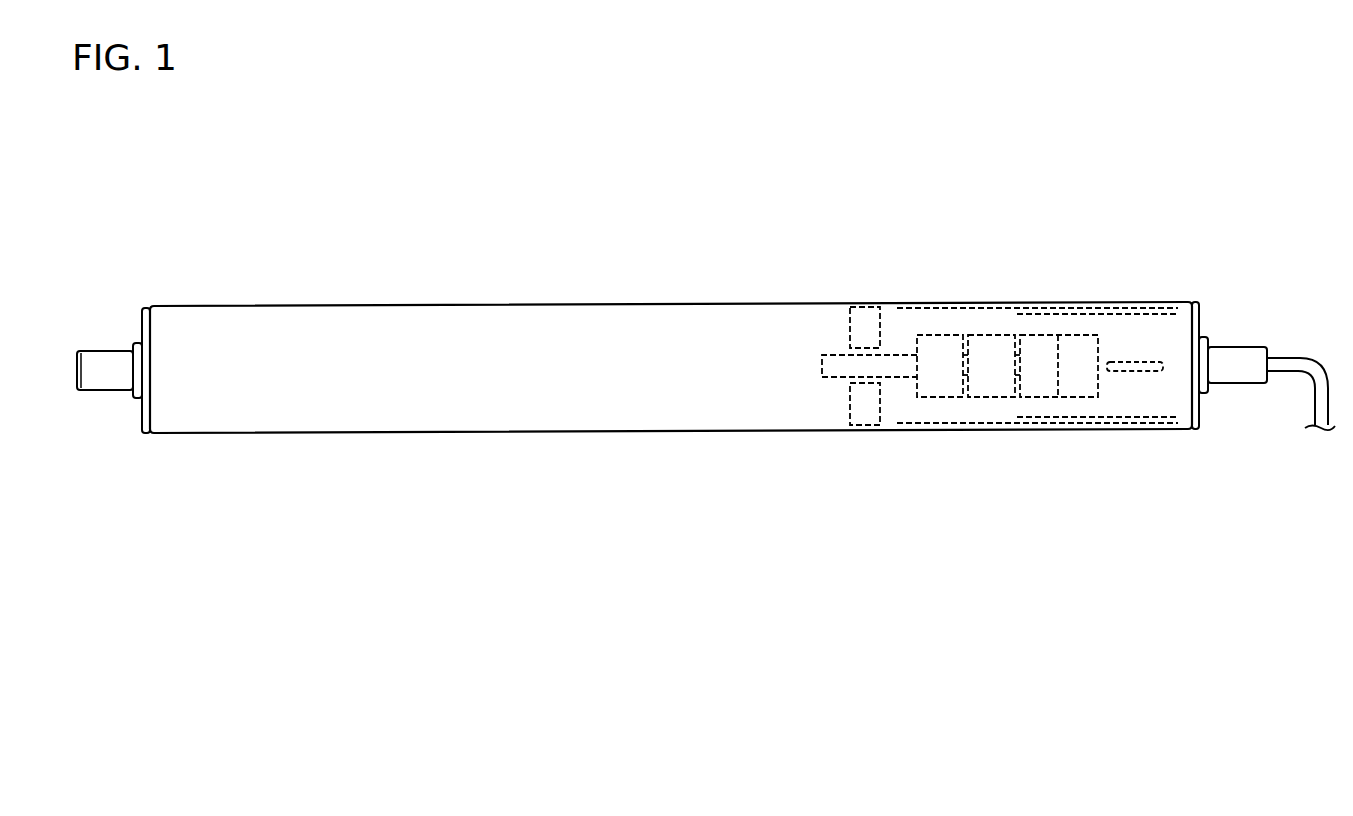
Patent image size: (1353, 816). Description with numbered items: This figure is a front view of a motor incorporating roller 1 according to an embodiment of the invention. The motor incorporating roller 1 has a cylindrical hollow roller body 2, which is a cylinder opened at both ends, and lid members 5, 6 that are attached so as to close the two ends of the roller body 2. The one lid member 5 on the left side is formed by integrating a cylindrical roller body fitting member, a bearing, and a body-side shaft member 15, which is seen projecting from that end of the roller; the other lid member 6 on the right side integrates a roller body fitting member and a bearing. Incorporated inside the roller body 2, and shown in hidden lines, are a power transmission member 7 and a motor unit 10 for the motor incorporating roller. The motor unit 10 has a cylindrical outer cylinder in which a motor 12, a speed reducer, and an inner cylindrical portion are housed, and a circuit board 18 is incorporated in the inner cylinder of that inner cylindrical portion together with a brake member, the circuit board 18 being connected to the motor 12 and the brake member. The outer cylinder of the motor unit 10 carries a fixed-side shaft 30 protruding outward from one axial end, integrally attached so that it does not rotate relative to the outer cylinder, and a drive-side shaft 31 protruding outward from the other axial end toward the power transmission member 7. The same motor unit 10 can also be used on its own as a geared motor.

The motor incorporating roller 1 is at (978, 197).
The roller body 2 is at (725, 303).
The lid member 5 is at (143, 318).
The lid member 6 is at (1196, 320).
The power transmission member 7 is at (866, 310).
The motor unit 10 is at (988, 318).
The motor 12 is at (990, 388).
The body-side shaft member 15 is at (107, 360).
The circuit board 18 is at (1127, 362).
The fixed-side shaft 30 is at (1247, 360).
The drive-side shaft 31 is at (840, 370).